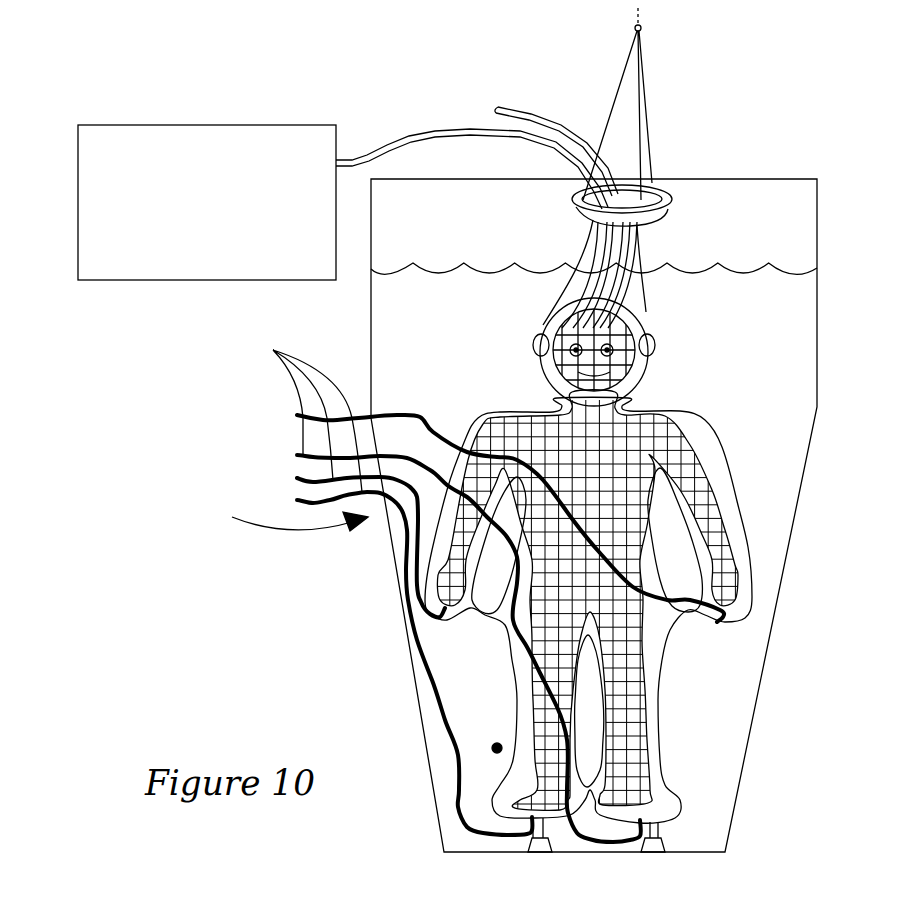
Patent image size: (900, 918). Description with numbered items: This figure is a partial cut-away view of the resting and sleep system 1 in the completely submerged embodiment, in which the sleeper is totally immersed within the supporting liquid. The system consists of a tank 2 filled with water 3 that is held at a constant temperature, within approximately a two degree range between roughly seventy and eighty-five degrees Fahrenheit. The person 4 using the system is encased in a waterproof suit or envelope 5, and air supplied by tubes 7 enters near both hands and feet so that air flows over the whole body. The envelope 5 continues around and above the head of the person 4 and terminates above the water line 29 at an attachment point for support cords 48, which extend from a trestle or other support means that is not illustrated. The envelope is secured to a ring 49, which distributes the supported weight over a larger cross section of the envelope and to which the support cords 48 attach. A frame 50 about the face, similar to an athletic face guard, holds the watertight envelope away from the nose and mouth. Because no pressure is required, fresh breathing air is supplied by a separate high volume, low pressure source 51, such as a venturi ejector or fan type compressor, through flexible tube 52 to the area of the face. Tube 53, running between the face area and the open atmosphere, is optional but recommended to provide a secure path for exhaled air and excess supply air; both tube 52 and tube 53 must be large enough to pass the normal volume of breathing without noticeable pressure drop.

The resting and sleep system 1 is at (286, 522).
The tank 2 is at (415, 682).
The water 3 is at (497, 748).
The person 4 is at (627, 325).
The waterproof suit or envelope 5 is at (738, 487).
The tubes 7 is at (273, 350).
The water line 29 is at (777, 263).
The support cords 48 is at (650, 110).
The ring 49 is at (668, 190).
The frame 50 is at (623, 326).
The high volume, low pressure source 51 is at (125, 280).
The flexible tube 52 is at (423, 130).
The tube 53 is at (560, 127).